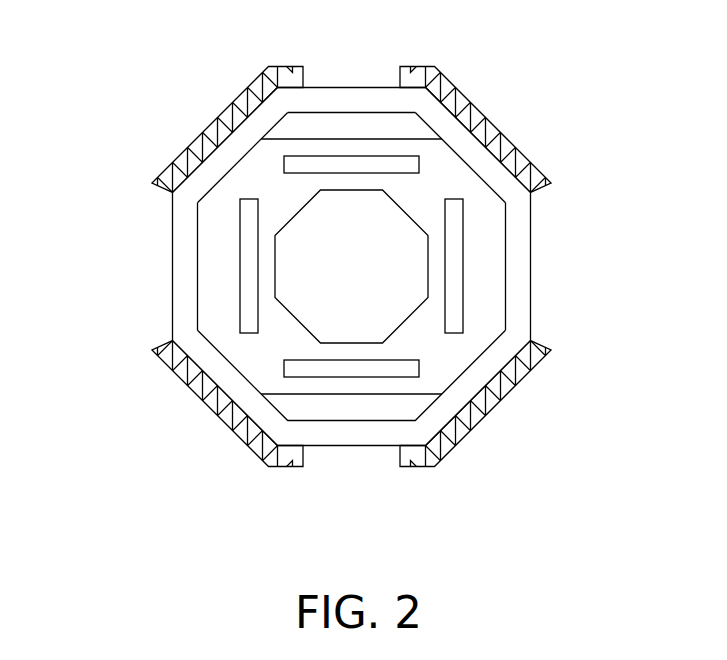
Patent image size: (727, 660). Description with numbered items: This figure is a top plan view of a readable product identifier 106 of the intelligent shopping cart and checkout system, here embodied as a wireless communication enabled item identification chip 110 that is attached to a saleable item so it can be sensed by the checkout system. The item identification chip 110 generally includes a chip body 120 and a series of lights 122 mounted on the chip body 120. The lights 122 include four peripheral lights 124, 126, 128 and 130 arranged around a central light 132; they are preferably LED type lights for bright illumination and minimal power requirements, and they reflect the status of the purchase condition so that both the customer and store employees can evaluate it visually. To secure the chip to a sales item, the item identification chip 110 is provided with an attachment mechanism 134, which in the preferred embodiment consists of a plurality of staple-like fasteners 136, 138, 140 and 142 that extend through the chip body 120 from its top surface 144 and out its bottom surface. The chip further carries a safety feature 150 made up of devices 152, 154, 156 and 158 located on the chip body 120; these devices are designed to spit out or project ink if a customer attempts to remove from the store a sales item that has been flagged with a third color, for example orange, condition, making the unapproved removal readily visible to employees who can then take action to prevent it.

The readable product identifier 106 is at (122, 72).
The item identification chip 110 is at (135, 112).
The chip body 120 is at (522, 230).
The lights 122 is at (328, 108).
The peripheral light 124 is at (355, 129).
The peripheral light 126 is at (520, 253).
The peripheral light 128 is at (307, 410).
The peripheral light 130 is at (188, 287).
The central light 132 is at (357, 267).
The attachment mechanism 134 is at (468, 275).
The staple-like fastener 136 is at (402, 170).
The staple-like fastener 138 is at (455, 298).
The staple-like fastener 140 is at (378, 372).
The staple-like fastener 142 is at (248, 325).
The top surface 144 is at (463, 178).
The safety feature 150 is at (528, 153).
The ink projecting device 152 is at (536, 163).
The ink projecting device 154 is at (488, 407).
The ink projecting device 156 is at (212, 408).
The ink projecting device 158 is at (230, 101).